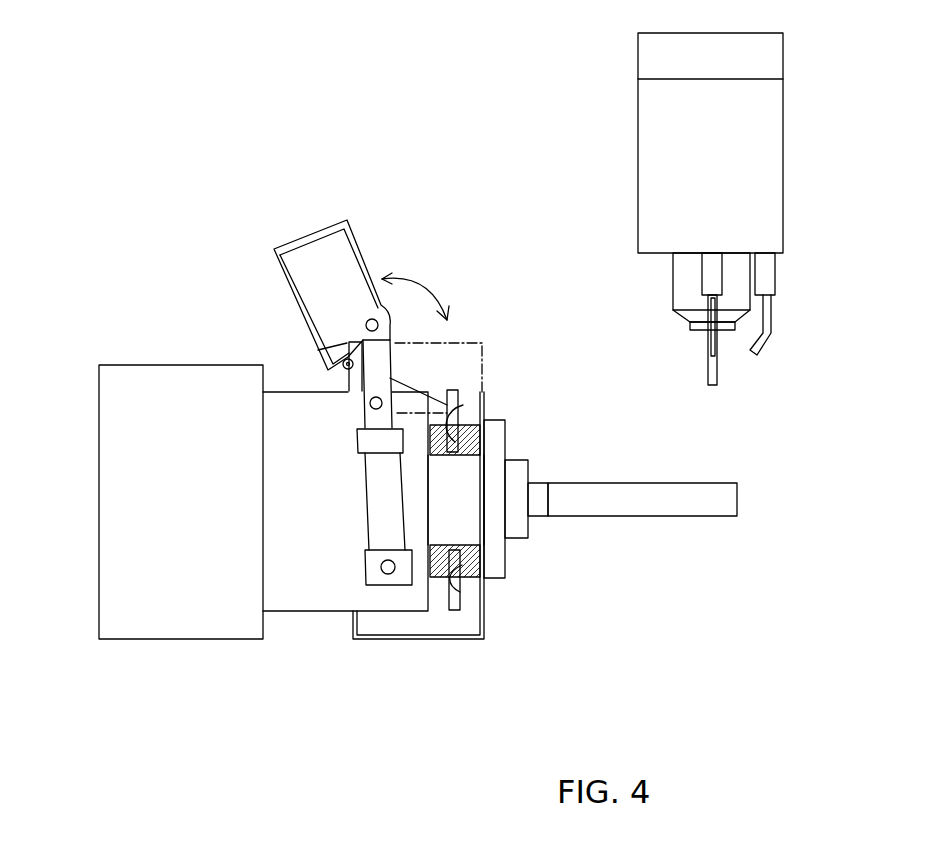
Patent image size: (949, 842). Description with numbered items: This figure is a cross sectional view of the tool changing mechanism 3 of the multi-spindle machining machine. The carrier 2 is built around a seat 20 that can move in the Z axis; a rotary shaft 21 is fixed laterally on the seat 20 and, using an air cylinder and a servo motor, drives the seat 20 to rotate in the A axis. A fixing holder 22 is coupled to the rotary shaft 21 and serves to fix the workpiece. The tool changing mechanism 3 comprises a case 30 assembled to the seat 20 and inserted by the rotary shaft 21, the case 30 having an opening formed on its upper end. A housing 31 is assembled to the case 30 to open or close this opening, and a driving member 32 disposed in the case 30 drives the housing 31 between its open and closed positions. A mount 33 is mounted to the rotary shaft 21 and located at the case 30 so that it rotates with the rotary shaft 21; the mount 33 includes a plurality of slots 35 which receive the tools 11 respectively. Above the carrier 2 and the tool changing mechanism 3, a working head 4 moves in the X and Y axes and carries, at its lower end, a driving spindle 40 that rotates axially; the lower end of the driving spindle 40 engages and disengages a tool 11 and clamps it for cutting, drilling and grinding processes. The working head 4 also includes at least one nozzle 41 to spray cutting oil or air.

The carrier 2 is at (710, 592).
The tool changing mechanism 3 is at (410, 668).
The working head 4 is at (777, 155).
The tool 11 is at (450, 390).
The seat 20 is at (303, 600).
The rotary shaft 21 is at (472, 517).
The fixing holder 22 is at (732, 500).
The case 30 is at (485, 627).
The housing 31 is at (293, 243).
The driving member 32 is at (375, 500).
The mount 33 is at (473, 442).
The slot 35 is at (458, 413).
The driving spindle 40 is at (683, 287).
The nozzle 41 is at (767, 332).